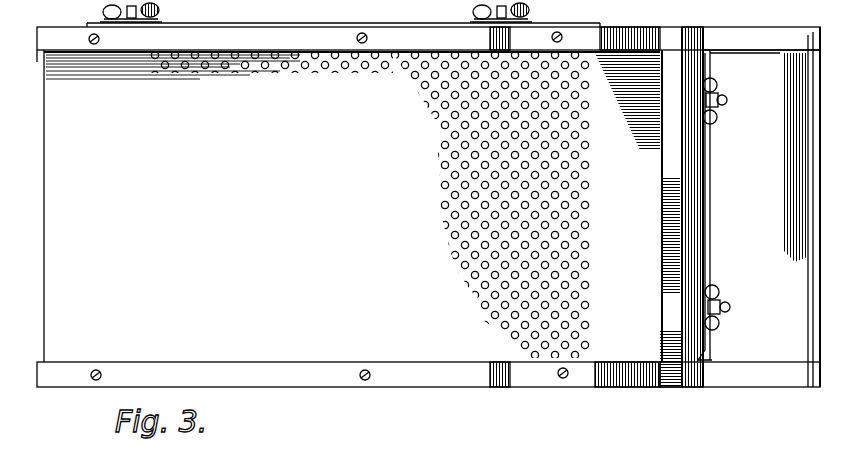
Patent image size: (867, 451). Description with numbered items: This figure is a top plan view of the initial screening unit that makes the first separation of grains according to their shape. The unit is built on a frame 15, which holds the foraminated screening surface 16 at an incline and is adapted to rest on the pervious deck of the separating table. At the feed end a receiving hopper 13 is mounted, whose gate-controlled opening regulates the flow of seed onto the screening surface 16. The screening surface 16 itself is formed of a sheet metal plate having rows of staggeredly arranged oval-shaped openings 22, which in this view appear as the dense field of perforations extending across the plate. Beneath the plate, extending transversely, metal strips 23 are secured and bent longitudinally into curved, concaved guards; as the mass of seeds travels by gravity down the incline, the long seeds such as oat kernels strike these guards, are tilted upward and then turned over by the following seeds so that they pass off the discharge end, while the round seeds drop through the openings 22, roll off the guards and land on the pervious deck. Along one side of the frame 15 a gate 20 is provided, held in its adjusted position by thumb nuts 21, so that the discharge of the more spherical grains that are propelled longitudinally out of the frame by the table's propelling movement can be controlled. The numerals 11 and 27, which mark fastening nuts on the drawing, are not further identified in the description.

The wing nuts 11 is at (708, 112).
The receiving hopper 13 is at (716, 187).
The frame 15 is at (428, 388).
The screening surface 16 is at (428, 194).
The gate 20 is at (332, 25).
The thumb nuts 21 is at (629, 206).
The oval-shaped openings 22 is at (586, 177).
The metal strips 23 is at (451, 230).
The wing nuts 27 is at (168, 5).